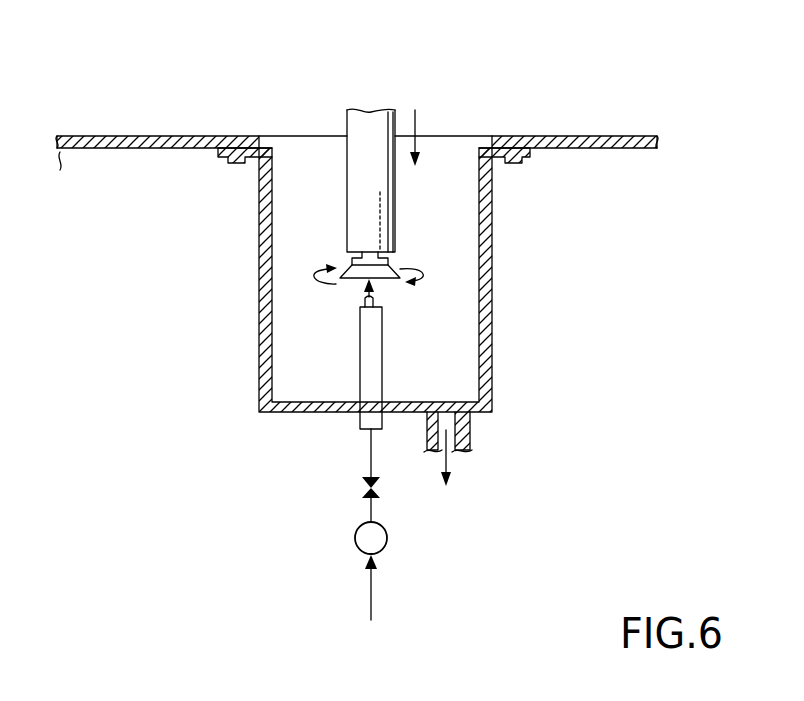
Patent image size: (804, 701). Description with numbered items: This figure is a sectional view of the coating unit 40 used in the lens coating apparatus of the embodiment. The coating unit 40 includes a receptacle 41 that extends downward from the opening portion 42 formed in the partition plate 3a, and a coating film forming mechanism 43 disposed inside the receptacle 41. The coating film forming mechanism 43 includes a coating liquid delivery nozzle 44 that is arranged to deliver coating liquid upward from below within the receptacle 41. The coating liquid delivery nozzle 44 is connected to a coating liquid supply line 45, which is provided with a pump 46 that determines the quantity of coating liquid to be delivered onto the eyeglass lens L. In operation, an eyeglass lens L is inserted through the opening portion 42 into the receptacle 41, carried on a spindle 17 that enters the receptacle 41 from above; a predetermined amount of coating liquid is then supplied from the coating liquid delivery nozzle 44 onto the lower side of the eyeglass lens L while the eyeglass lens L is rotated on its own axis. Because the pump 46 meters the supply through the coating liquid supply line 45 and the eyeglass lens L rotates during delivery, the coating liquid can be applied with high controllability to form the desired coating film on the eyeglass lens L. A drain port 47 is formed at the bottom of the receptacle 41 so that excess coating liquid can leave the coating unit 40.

The partition plate 3a is at (126, 144).
The coating unit 40 is at (505, 98).
The receptacle 41 is at (264, 228).
The opening portion 42 is at (300, 148).
The spindle / holding unit 17 is at (357, 190).
The eyeglass lens L is at (345, 264).
The coating film forming mechanism 43 is at (411, 333).
The coating liquid delivery nozzle 44 is at (368, 350).
The coating liquid supply line 45 is at (370, 452).
The pump 46 is at (389, 540).
The drain port 47 is at (469, 426).